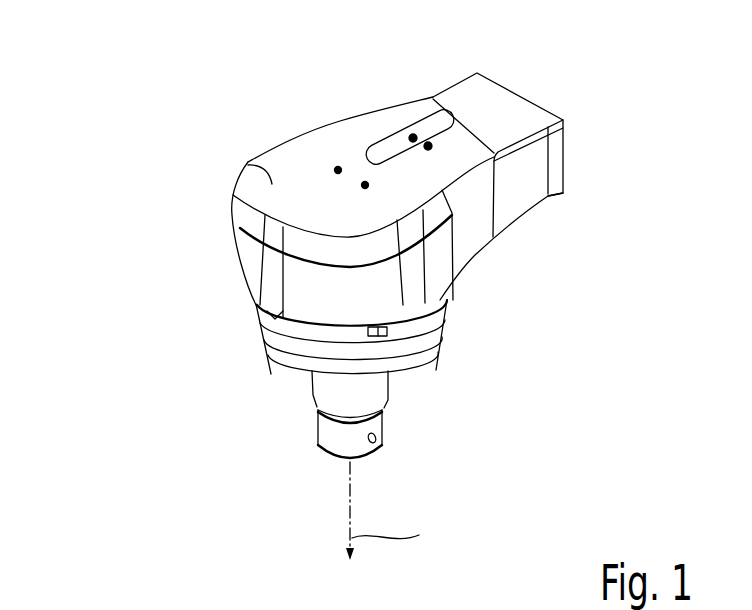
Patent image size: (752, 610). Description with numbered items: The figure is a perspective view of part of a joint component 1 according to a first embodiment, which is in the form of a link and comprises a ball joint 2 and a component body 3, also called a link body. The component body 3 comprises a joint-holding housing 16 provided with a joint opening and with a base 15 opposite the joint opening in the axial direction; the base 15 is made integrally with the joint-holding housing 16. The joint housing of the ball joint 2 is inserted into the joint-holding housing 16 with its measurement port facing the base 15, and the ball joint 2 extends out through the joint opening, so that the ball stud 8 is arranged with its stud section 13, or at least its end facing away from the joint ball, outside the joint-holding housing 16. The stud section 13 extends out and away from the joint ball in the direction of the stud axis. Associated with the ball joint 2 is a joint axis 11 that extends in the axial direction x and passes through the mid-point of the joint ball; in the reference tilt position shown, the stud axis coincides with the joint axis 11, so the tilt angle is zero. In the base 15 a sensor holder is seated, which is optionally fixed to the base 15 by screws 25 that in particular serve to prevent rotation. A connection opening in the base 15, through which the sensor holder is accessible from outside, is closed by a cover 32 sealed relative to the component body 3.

The joint component 1 is at (148, 100).
The ball joint 2 is at (318, 363).
The component body 3 is at (515, 164).
The ball stud 8 is at (395, 427).
The joint axis 11 is at (352, 487).
The stud section 13 is at (316, 401).
The base 15 is at (256, 158).
The joint-holding housing 16 is at (295, 240).
The screws 25 is at (364, 181).
The cover 32 is at (437, 131).